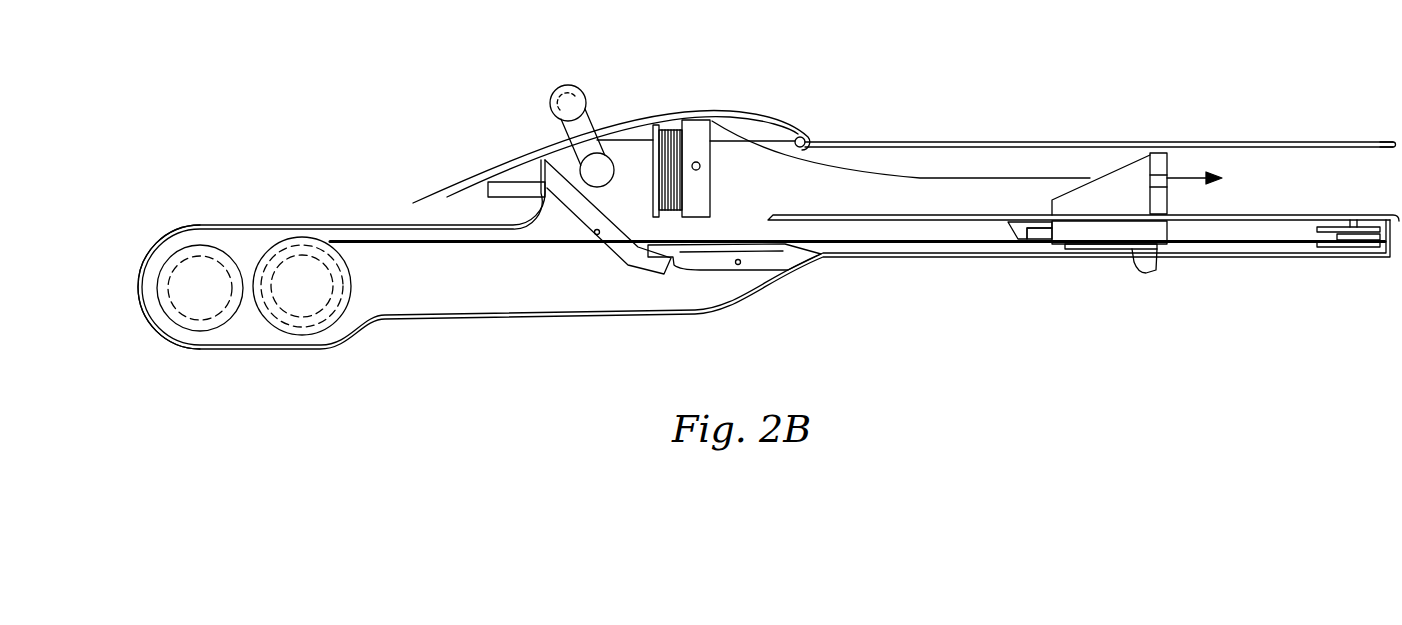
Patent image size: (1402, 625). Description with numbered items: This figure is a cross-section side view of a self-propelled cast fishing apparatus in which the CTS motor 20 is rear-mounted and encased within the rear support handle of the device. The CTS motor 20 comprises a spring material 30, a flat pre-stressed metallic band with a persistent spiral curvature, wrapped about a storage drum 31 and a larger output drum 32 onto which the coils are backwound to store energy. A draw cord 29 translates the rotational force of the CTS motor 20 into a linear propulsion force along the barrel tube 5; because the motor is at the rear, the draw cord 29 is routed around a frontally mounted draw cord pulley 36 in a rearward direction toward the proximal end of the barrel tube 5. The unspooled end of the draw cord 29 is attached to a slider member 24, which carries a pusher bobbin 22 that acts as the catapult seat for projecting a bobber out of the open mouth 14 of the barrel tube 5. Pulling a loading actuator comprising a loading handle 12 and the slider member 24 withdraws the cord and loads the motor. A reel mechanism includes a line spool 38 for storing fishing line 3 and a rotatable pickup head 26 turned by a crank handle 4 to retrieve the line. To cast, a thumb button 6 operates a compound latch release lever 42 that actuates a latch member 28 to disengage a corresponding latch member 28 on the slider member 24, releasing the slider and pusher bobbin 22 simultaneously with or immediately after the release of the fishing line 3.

The fishing line 3 is at (990, 178).
The crank handle 4 is at (580, 90).
The barrel tube 5 is at (917, 143).
The thumb button 6 is at (533, 150).
The loading handle 12 is at (1141, 268).
The open mouth 14 is at (1398, 138).
The CTS motor 20 is at (241, 330).
The pusher bobbin 22 is at (1160, 158).
The slider member 24 is at (1157, 232).
The pickup head 26 is at (698, 169).
The latch member 28 is at (767, 272).
The draw cord 29 is at (432, 247).
The spring material 30 is at (250, 288).
The storage drum 31 is at (180, 250).
The output drum 32 is at (273, 257).
The draw cord pulley 36 is at (1340, 247).
The line spool 38 is at (693, 122).
The compound latch release lever 42 is at (518, 181).